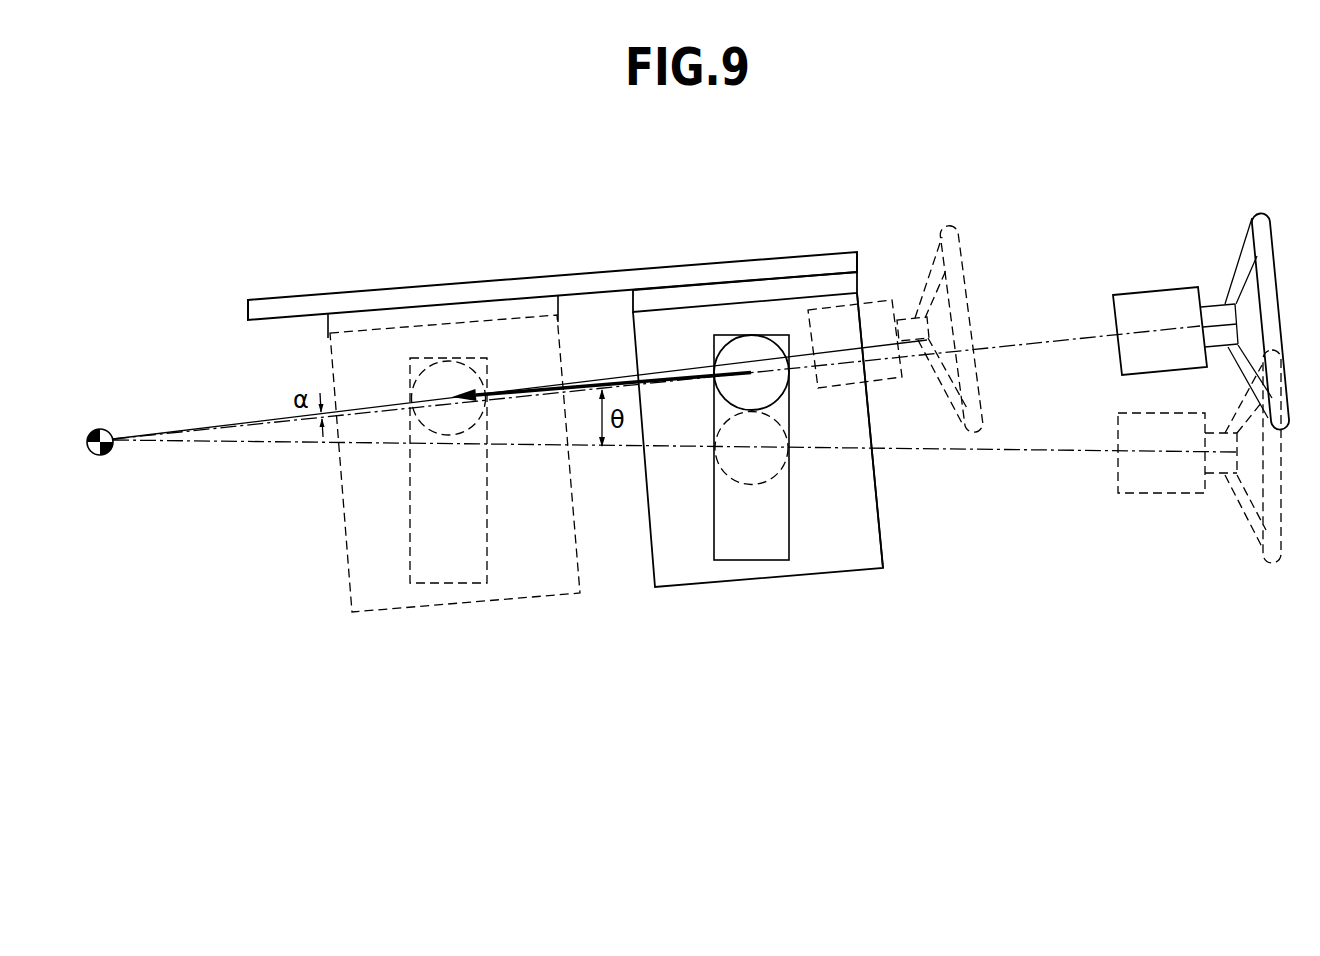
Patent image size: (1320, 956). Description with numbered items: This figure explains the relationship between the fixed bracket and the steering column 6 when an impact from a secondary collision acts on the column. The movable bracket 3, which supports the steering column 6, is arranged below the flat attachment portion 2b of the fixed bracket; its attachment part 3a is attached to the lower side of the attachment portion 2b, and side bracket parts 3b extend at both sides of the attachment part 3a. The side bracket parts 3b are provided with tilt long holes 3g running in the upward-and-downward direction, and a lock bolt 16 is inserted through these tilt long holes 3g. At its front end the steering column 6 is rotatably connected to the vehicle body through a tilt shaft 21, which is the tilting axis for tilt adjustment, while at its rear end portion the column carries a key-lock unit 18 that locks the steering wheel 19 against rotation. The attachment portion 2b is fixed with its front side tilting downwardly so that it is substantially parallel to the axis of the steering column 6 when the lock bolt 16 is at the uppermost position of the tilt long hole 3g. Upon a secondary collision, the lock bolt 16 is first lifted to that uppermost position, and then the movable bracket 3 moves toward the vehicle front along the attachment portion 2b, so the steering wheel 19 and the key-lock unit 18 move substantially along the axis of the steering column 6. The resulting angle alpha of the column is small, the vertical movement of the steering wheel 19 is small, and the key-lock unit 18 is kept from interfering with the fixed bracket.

The attachment portion 2b is at (483, 281).
The movable bracket 3 is at (694, 592).
The attachment part 3a is at (857, 281).
The side bracket part 3b is at (832, 562).
The tilt long hole 3g is at (742, 543).
The lock bolt 16 is at (748, 336).
The steering column 6 is at (1047, 341).
The key-lock unit 18 is at (1153, 296).
The steering wheel 19 is at (1260, 214).
The tilt shaft 21 is at (100, 429).